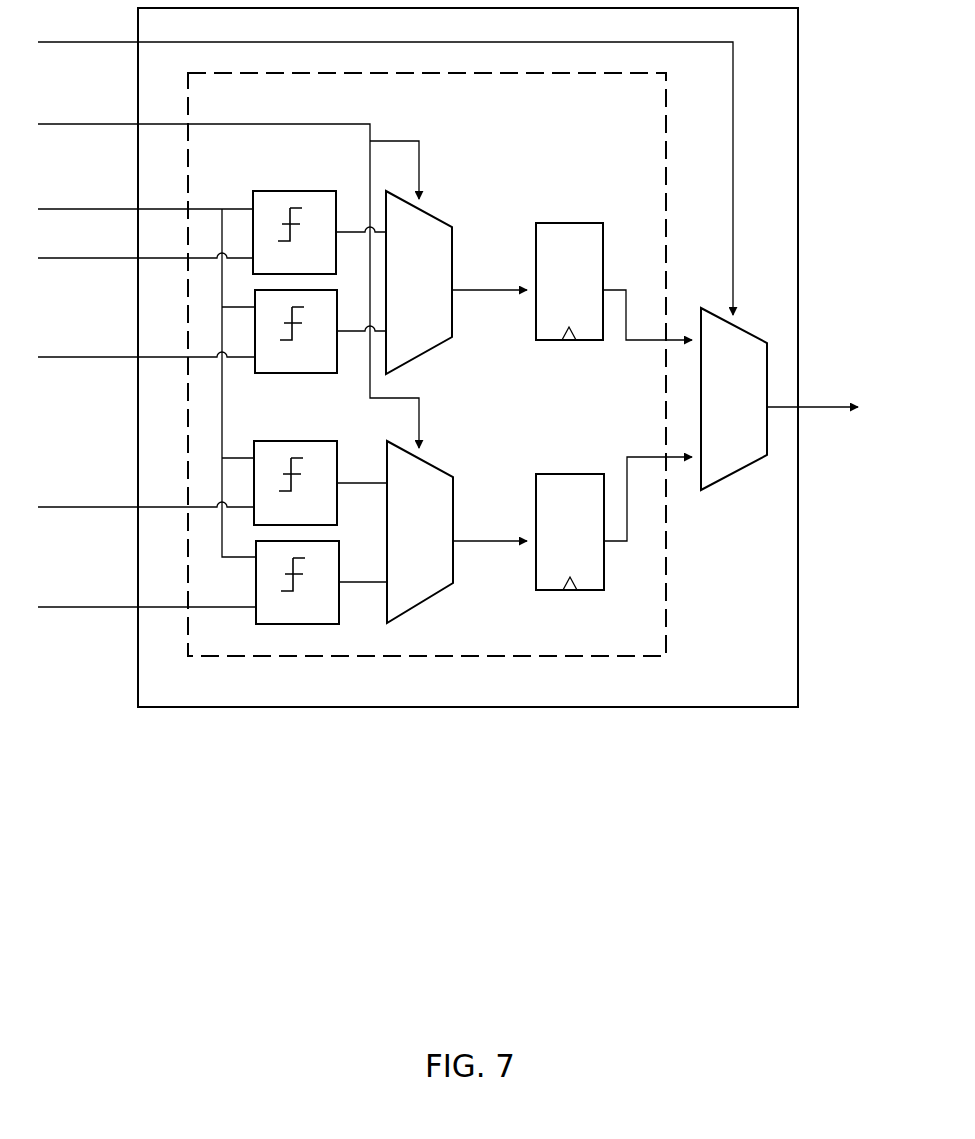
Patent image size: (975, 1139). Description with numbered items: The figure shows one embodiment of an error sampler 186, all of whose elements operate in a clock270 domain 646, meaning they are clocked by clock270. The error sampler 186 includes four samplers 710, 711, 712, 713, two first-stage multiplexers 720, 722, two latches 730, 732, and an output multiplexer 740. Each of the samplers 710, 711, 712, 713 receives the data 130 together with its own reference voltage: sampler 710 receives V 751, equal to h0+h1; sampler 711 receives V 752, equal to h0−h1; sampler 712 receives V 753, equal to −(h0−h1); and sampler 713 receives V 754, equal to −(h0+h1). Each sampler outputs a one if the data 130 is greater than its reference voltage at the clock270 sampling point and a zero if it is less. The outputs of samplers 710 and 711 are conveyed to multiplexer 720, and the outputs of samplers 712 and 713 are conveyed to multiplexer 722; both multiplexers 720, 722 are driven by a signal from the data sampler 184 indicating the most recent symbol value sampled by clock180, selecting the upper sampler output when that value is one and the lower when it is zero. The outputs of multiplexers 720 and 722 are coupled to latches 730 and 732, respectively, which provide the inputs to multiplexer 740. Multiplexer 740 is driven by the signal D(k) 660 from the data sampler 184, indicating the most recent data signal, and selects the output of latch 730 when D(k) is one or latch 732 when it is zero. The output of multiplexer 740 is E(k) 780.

The D(k) 660 is at (385, 164).
The data sampler 184 is at (218, 274).
The data 130 is at (136, 369).
The reference voltage V 751 is at (143, 244).
The reference voltage V 752 is at (144, 344).
The reference voltage V 753 is at (143, 477).
The reference voltage V 754 is at (144, 577).
The clock270 domain 646 is at (658, 101).
The error sampler 186 is at (543, 697).
The sampler 710 is at (309, 264).
The sampler 711 is at (310, 364).
The sampler 712 is at (310, 516).
The sampler 713 is at (311, 615).
The multiplexer 720 is at (434, 294).
The multiplexer 722 is at (434, 545).
The latch 730 is at (585, 292).
The latch 732 is at (585, 544).
The multiplexer 740 is at (734, 399).
The E(k) 780 is at (836, 393).